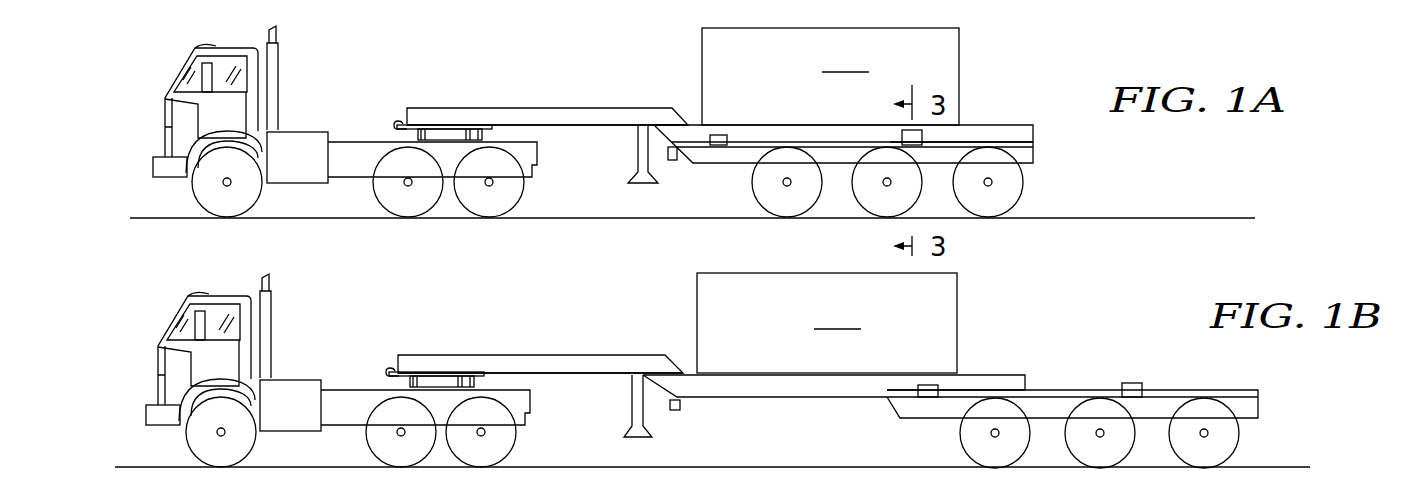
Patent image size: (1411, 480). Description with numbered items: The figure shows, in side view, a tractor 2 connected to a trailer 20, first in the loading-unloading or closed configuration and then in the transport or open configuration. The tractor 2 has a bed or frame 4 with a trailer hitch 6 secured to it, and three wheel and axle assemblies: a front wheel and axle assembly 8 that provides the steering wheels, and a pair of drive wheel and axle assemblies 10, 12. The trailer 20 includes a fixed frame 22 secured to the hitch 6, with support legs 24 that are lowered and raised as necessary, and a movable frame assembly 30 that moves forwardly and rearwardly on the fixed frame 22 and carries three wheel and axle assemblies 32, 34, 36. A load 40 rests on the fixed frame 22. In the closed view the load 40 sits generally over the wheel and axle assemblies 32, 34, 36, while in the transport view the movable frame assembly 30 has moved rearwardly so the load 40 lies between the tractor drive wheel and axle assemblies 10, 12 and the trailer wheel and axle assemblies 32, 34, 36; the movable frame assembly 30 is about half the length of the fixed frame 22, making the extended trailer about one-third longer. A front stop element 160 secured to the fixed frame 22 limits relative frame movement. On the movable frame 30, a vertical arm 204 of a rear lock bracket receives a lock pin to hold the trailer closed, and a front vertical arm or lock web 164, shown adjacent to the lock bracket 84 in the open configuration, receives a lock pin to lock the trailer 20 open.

In FIG. 1A, the tractor 2 is at (171, 68).
In FIG. 1B, the tractor 2 is at (163, 320).
In FIG. 1A, the bed or frame 4 is at (345, 141).
In FIG. 1B, the bed or frame 4 is at (341, 388).
In FIG. 1A, the trailer hitch 6 is at (407, 130).
In FIG. 1B, the trailer hitch 6 is at (398, 381).
In FIG. 1A, the front wheel and axle assembly 8 is at (203, 191).
In FIG. 1B, the front wheel and axle assembly 8 is at (196, 443).
In FIG. 1A, the drive wheel and axle assembly 10 is at (406, 221).
In FIG. 1B, the drive wheel and axle assembly 10 is at (367, 452).
In FIG. 1A, the drive wheel and axle assembly 12 is at (481, 221).
In FIG. 1B, the drive wheel and axle assembly 12 is at (511, 456).
In FIG. 1A, the trailer 20 is at (584, 101).
In FIG. 1B, the trailer 20 is at (522, 351).
In FIG. 1A, the fixed frame 22 is at (554, 133).
In FIG. 1B, the fixed frame 22 is at (546, 382).
In FIG. 1A, the support legs 24 is at (636, 160).
In FIG. 1B, the support legs 24 is at (632, 406).
In FIG. 1A, the movable frame assembly 30 is at (686, 168).
In FIG. 1B, the movable frame assembly 30 is at (1166, 385).
In FIG. 1A, the wheel and axle assembly 32 is at (782, 221).
In FIG. 1B, the wheel and axle assembly 32 is at (1020, 445).
In FIG. 1A, the wheel and axle assembly 34 is at (882, 221).
In FIG. 1B, the wheel and axle assembly 34 is at (1125, 446).
In FIG. 1A, the wheel and axle assembly 36 is at (992, 221).
In FIG. 1B, the wheel and axle assembly 36 is at (1232, 443).
In FIG. 1A, the load 40 is at (961, 92).
In FIG. 1B, the load 40 is at (959, 331).
In FIG. 1A, the lock bracket 84 is at (916, 147).
In FIG. 1B, the lock bracket 84 is at (915, 388).
In FIG. 1A, the front stop element 160 is at (672, 162).
In FIG. 1B, the front stop element 160 is at (682, 405).
In FIG. 1A, the vertical arm 164 is at (724, 134).
In FIG. 1B, the vertical arm 164 is at (938, 385).
In FIG. 1A, the vertical arm 204 is at (902, 130).
In FIG. 1B, the vertical arm 204 is at (1158, 356).